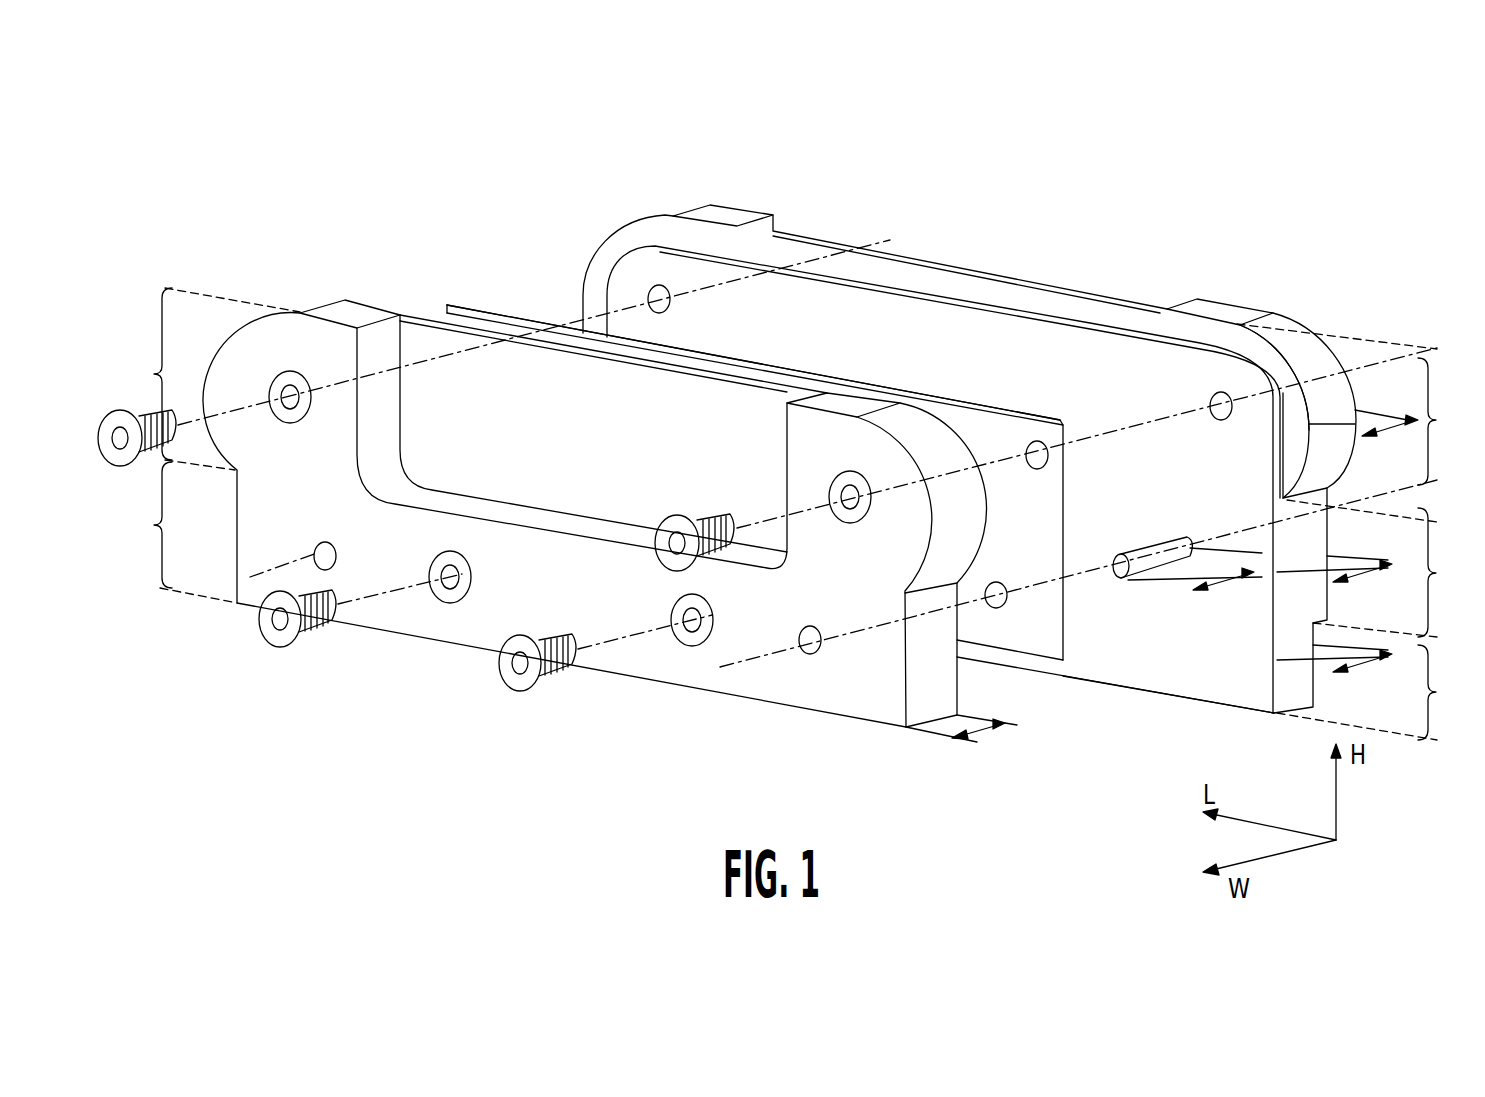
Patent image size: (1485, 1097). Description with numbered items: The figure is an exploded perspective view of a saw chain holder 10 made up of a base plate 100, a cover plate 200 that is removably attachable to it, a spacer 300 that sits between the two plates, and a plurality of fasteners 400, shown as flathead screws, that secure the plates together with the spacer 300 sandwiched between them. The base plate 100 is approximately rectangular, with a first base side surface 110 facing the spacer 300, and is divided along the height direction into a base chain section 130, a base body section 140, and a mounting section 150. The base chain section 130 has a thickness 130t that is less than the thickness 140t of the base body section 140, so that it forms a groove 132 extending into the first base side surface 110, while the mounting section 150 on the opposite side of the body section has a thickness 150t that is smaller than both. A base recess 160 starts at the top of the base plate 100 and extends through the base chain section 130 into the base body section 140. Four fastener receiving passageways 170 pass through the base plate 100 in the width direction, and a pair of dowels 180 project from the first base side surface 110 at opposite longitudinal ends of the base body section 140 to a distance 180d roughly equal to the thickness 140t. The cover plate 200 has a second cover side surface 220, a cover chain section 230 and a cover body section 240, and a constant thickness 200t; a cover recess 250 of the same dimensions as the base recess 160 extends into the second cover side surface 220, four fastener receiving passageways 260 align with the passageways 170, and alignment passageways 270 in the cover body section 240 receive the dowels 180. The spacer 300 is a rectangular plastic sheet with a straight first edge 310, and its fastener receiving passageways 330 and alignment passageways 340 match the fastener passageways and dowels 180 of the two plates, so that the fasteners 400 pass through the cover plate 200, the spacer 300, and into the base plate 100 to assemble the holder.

The saw chain holder 10 is at (982, 146).
The base plate 100 is at (1298, 268).
The first base side surface 110 is at (1153, 680).
The base chain section 130 is at (1356, 423).
The thickness of base chain section 130t is at (1382, 434).
The groove 132 is at (1212, 328).
The base body section 140 is at (1394, 572).
The thickness of base body section 140t is at (1372, 574).
The mounting section 150 is at (1376, 692).
The thickness of mounting section 150t is at (1366, 675).
The base recess 160 is at (1104, 265).
The fastener receiving passageways 170 is at (652, 288).
The dowels 180 is at (1148, 548).
The distance 180d is at (1228, 592).
The cover plate 200 is at (316, 278).
The thickness of cover plate 200t is at (980, 738).
The second cover side surface 220 is at (853, 706).
The cover chain section 230 is at (206, 379).
The cover body section 240 is at (172, 532).
The cover recess 250 is at (456, 380).
The fastener receiving passageways 260 is at (294, 423).
The alignment passageways 270 is at (320, 565).
The spacer 300 is at (1043, 646).
The first edge 310 is at (888, 388).
The fastener receiving passageways 330 is at (1037, 440).
The alignment passageways 340 is at (996, 610).
The fasteners 400 is at (118, 408).